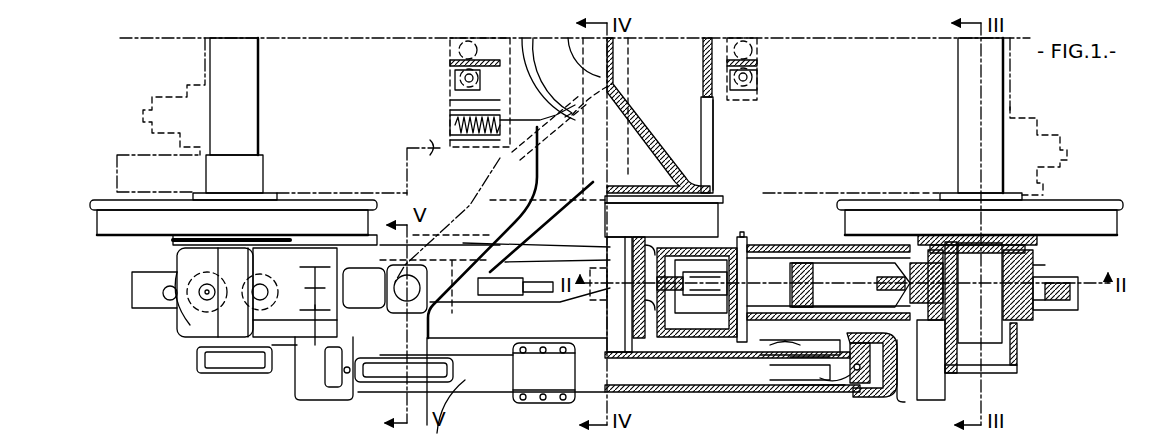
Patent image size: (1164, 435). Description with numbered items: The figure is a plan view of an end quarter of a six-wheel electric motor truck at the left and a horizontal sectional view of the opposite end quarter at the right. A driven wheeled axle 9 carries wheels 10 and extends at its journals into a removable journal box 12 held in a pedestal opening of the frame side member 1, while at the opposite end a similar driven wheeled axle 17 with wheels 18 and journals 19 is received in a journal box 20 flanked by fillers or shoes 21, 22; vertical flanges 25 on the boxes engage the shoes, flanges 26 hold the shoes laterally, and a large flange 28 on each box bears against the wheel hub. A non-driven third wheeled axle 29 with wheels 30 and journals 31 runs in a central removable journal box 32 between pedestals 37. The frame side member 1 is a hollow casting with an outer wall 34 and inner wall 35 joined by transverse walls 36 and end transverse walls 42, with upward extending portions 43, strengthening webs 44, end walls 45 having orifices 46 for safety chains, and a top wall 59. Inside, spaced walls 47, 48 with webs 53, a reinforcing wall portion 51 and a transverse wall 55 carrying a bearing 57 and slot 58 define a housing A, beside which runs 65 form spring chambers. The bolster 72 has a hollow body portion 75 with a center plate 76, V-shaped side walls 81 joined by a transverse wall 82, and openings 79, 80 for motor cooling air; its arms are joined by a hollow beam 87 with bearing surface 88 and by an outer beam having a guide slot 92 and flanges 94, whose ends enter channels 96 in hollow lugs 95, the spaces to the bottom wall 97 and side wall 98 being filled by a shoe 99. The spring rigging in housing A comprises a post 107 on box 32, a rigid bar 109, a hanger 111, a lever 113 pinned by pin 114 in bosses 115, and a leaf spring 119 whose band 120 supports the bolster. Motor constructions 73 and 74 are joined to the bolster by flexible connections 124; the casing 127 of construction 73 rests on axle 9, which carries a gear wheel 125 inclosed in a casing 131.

The frame side member 1 is at (505, 332).
The driven wheeled axle 9 is at (248, 118).
The wheels 10 is at (308, 213).
The removable journal box 12 is at (197, 360).
The driven wheeled axle 17 is at (958, 123).
The wheels 18 is at (1073, 213).
The journals 19 is at (1003, 333).
The journal box 20 is at (1017, 368).
The filler or shoe 21 is at (958, 310).
The filler or shoe 22 is at (1003, 270).
The vertical flange 25 is at (1035, 262).
The flange 26 is at (1045, 270).
The flange 28 is at (1053, 240).
The non-driven third wheeled axle 29 is at (627, 78).
The wheels 30 is at (722, 215).
The journals 31 is at (622, 297).
The removable journal box 32 is at (640, 365).
The outer wall 34 is at (708, 320).
The inner wall 35 is at (773, 253).
The transverse walls 36 is at (732, 372).
The pedestals 37 is at (657, 248).
The transverse walls 42 is at (922, 318).
The upward extending portions 43 is at (187, 335).
The strengthening webs 44 is at (297, 345).
The outer and inner walls 45 is at (148, 307).
The orifices 46 is at (1075, 300).
The spaced wall 47 is at (792, 285).
The spaced wall 48 is at (870, 260).
The wall portion 51 is at (690, 348).
The vertical strengthening webs 53 is at (315, 315).
The transverse wall 55 is at (295, 328).
The bearing 57 is at (342, 308).
The slot 58 is at (328, 290).
The wall 59 is at (183, 317).
The runs 65 is at (197, 272).
The bolster 72 is at (710, 97).
The electric motor construction 73 is at (426, 167).
The electric motor construction 74 is at (848, 190).
The hollow body portion 75 is at (674, 130).
The center plate 76 is at (575, 119).
The openings 79 is at (705, 170).
The openings 80 is at (491, 188).
The side walls 81 is at (612, 98).
The transverse wall 82 is at (618, 58).
The hollow beam 87 is at (547, 220).
The bearing surface 88 is at (595, 223).
The guide slot 92 is at (380, 375).
The flanges 94 is at (533, 403).
The hollow lugs 95 is at (312, 390).
The channel 96 is at (875, 395).
The vertical bottom wall 97 is at (900, 395).
The inner vertical side wall 98 is at (860, 395).
The filler or shoe 99 is at (855, 378).
The post 107 is at (519, 313).
The rigid bar 109 is at (568, 265).
The hanger 111 is at (677, 258).
The lever 113 is at (728, 255).
The pin 114 is at (743, 385).
The orificed bosses 115 is at (723, 337).
The leaf spring 119 is at (840, 300).
The band 120 is at (798, 270).
The flexible connection 124 is at (460, 93).
The gear wheel 125 is at (348, 372).
The inclosing supporting casing 127 is at (266, 60).
The casing 131 is at (130, 158).
The housing A is at (833, 245).